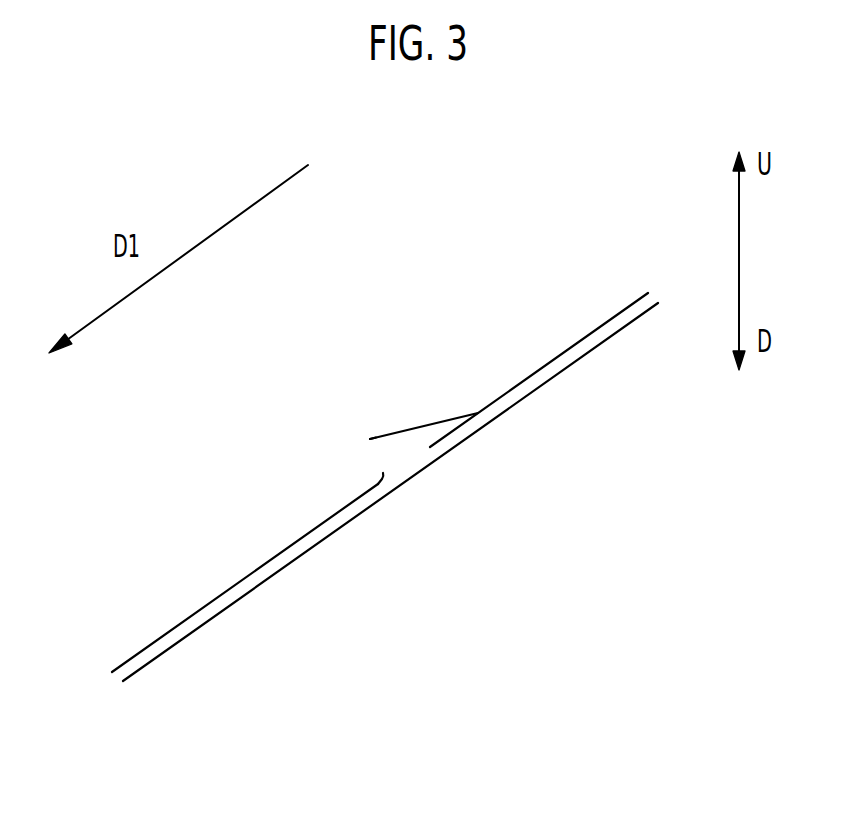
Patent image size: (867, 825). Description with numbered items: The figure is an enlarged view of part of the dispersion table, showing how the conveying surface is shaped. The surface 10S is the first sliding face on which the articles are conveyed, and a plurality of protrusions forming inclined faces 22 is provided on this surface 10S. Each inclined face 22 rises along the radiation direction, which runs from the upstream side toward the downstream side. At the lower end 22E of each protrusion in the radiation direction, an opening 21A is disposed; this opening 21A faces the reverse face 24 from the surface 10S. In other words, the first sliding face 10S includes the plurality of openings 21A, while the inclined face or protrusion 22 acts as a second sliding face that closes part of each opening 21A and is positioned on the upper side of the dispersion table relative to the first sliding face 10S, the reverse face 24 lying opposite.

The surface 10S is at (232, 584).
The reverse face 24 is at (282, 572).
The opening 21A is at (403, 462).
The inclined face 22 is at (422, 422).
The lower end 22E is at (358, 438).